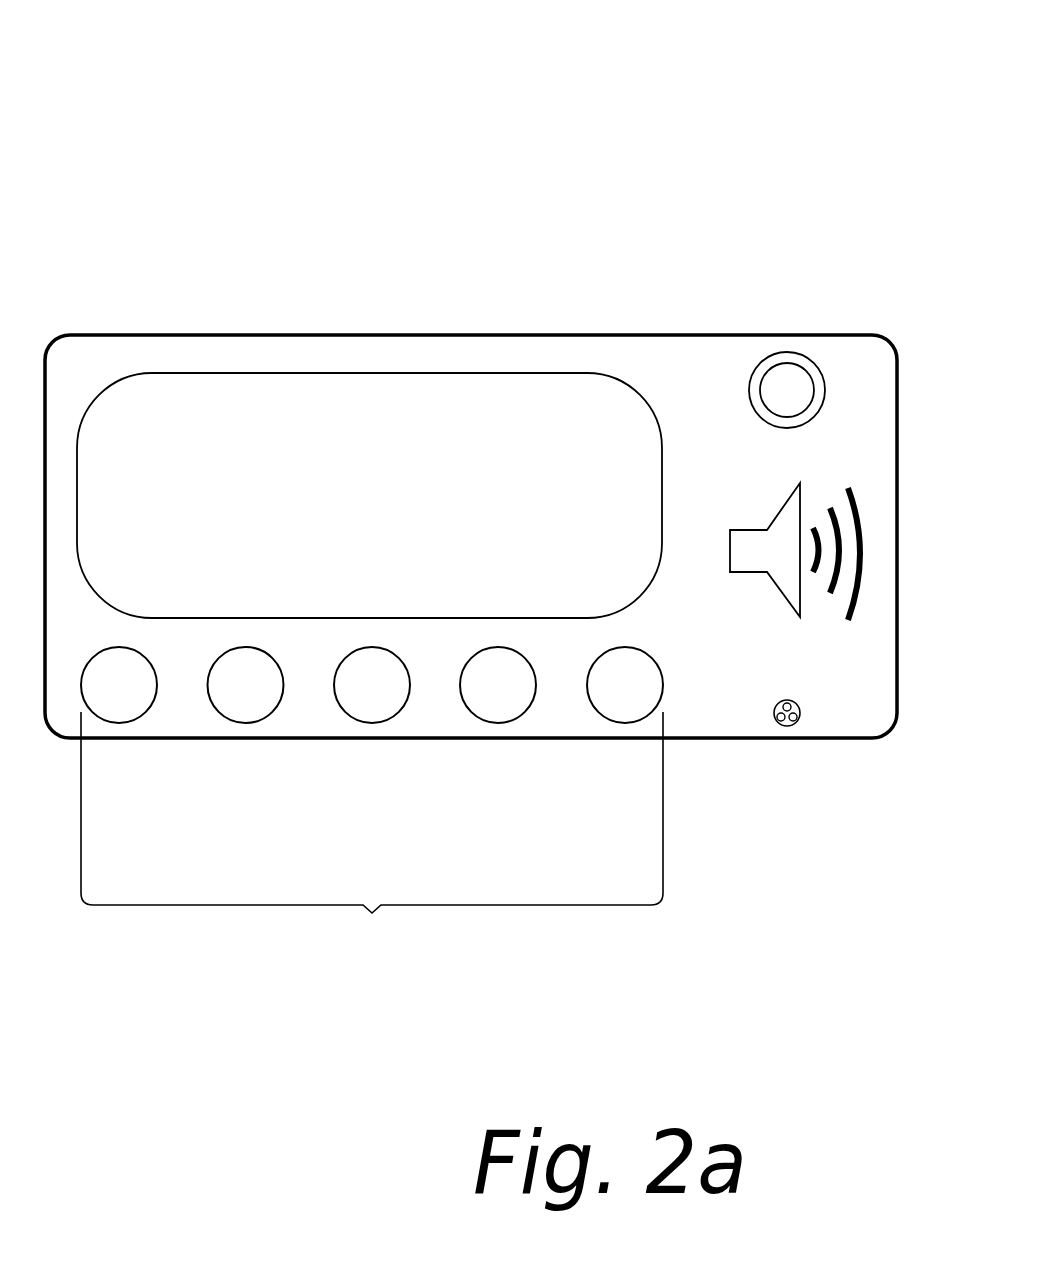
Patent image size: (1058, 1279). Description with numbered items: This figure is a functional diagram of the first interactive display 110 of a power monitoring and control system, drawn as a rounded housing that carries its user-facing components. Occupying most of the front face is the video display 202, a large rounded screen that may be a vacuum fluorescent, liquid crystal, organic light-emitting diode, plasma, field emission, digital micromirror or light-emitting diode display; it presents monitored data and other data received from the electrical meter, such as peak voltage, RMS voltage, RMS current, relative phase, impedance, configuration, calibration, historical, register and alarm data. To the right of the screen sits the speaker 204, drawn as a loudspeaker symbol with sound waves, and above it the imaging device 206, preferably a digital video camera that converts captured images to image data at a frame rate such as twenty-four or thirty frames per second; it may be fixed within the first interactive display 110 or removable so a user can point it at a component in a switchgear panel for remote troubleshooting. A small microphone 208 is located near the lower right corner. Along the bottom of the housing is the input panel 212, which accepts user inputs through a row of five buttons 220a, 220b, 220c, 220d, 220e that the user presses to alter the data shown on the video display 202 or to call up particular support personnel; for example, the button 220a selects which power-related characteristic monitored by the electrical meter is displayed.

The first interactive display 110 is at (690, 110).
The video display 202 is at (334, 400).
The speaker 204 is at (738, 540).
The imaging device 206 is at (788, 370).
The microphone 208 is at (784, 727).
The input panel 212 is at (372, 832).
The button 220a is at (113, 722).
The button 220b is at (239, 722).
The button 220c is at (366, 722).
The button 220d is at (492, 722).
The button 220e is at (619, 722).